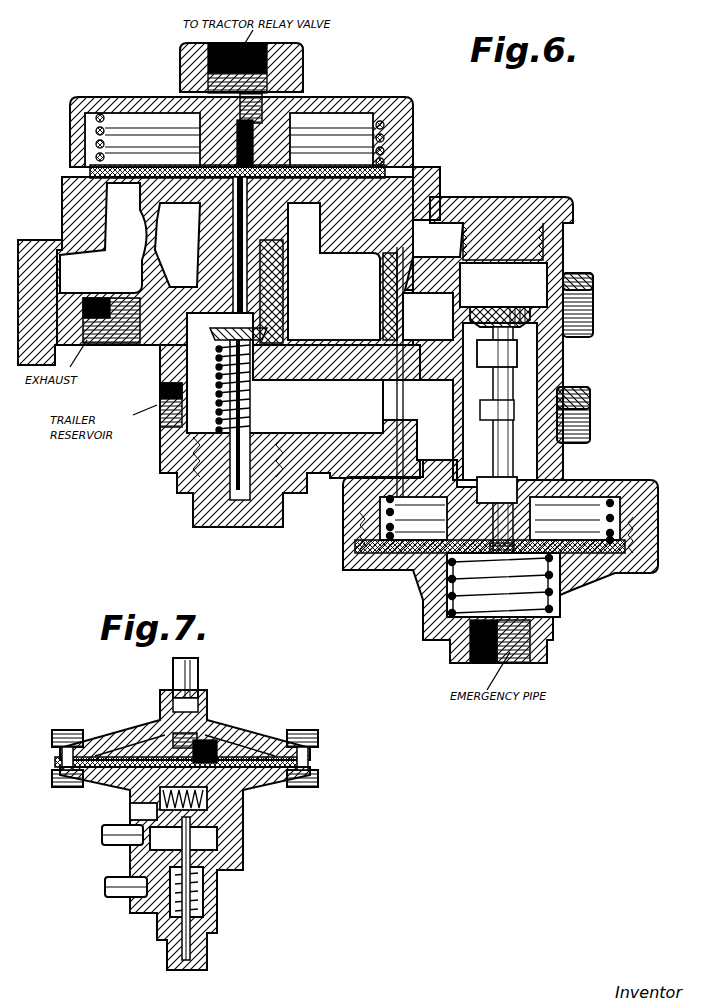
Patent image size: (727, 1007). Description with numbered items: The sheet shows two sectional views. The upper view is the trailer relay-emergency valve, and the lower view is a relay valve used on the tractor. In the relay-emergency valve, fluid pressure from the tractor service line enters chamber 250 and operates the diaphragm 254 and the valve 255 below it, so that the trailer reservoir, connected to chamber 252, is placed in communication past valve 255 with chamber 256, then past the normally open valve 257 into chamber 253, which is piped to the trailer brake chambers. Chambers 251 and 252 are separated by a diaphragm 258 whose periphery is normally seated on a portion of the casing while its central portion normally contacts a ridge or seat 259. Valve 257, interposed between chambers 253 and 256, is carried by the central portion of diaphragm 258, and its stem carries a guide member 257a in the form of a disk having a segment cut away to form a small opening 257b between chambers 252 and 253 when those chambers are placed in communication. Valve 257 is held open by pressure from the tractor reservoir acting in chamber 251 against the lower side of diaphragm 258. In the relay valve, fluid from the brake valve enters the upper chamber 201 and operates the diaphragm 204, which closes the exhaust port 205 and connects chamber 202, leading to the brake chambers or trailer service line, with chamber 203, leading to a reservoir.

In FIG. 6, the chamber 250 is at (333, 123).
In FIG. 6, the diaphragm 254 is at (417, 167).
In FIG. 6, the valve 255 is at (282, 337).
In FIG. 6, the chamber 256 is at (445, 318).
In FIG. 6, the normally open valve 257 is at (509, 305).
In FIG. 6, the guide member 257a is at (577, 400).
In FIG. 6, the small opening 257b is at (553, 473).
In FIG. 6, the chamber 253 is at (530, 464).
In FIG. 6, the diaphragm 258 is at (617, 577).
In FIG. 6, the chamber 251 is at (585, 604).
In FIG. 6, the ridge or seat 259 is at (423, 553).
In FIG. 6, the chamber 252 is at (197, 428).
In FIG. 7, the upper chamber 201 is at (210, 713).
In FIG. 7, the diaphragm 204 is at (267, 743).
In FIG. 7, the exhaust port 205 is at (131, 815).
In FIG. 7, the chamber 202 is at (220, 844).
In FIG. 7, the chamber 203 is at (203, 890).